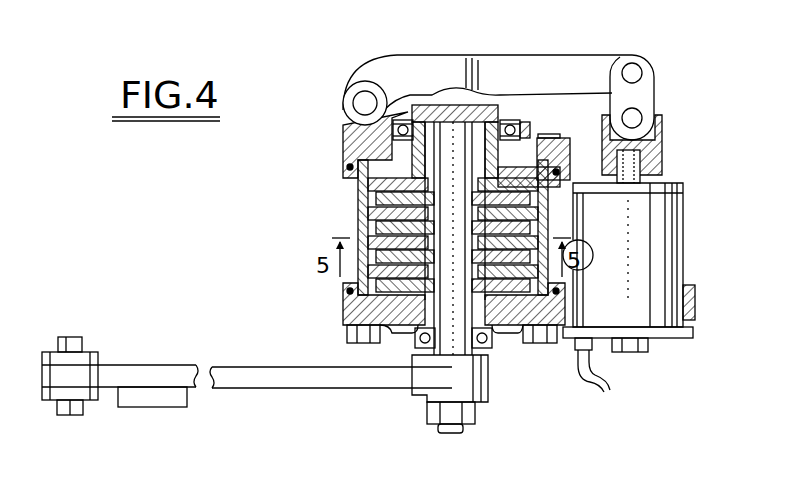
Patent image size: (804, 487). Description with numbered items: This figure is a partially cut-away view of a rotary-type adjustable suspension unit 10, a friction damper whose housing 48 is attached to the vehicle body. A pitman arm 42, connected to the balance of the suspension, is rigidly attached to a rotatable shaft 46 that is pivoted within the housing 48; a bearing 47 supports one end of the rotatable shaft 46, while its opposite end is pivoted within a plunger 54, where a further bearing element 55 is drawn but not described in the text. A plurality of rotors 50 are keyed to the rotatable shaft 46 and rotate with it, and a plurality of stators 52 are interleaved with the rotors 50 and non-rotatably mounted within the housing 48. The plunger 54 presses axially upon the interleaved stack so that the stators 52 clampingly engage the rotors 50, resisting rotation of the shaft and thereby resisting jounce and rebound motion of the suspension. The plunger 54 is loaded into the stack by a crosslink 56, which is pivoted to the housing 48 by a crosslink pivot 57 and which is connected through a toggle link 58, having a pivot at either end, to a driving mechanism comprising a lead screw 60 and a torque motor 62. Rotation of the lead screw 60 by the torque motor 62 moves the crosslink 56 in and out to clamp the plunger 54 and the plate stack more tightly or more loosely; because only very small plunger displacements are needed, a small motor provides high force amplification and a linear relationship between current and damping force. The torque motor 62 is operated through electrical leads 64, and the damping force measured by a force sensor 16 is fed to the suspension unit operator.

The adjustable suspension unit 10 is at (310, 140).
The force sensor 16 is at (140, 410).
The pitman arm 42 is at (300, 365).
The rotatable shaft 46 is at (462, 350).
The bearing 47 is at (415, 350).
The housing 48 is at (358, 228).
The rotors 50 is at (360, 225).
The stators 52 is at (548, 183).
The plunger 54 is at (428, 108).
The upper bearing 55 is at (518, 123).
The crosslink 56 is at (578, 60).
The crosslink pivot 57 is at (366, 100).
The toggle link 58 is at (630, 96).
The lead screw 60 is at (647, 157).
The torque motor 62 is at (683, 262).
The electrical leads 64 is at (609, 372).